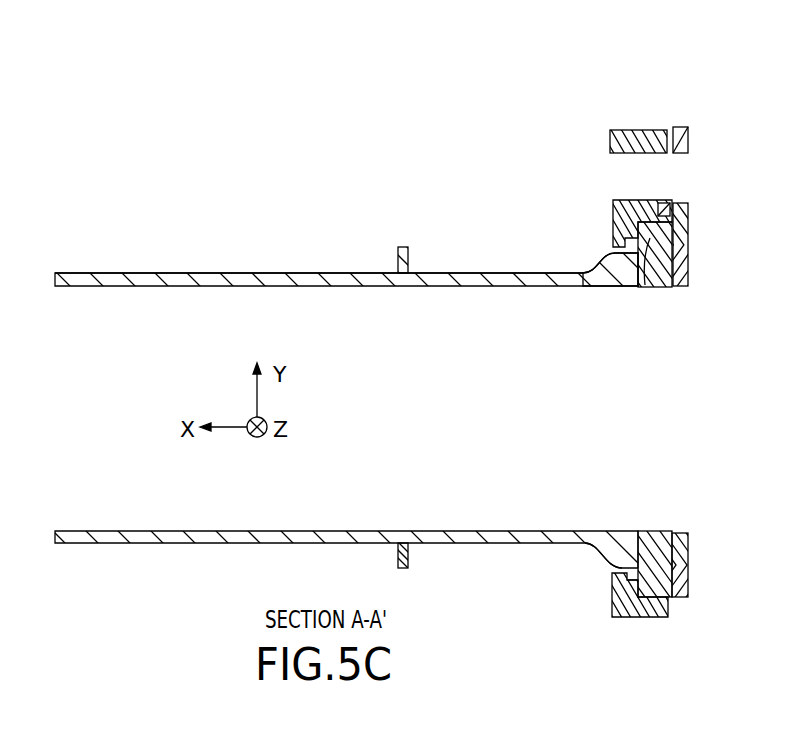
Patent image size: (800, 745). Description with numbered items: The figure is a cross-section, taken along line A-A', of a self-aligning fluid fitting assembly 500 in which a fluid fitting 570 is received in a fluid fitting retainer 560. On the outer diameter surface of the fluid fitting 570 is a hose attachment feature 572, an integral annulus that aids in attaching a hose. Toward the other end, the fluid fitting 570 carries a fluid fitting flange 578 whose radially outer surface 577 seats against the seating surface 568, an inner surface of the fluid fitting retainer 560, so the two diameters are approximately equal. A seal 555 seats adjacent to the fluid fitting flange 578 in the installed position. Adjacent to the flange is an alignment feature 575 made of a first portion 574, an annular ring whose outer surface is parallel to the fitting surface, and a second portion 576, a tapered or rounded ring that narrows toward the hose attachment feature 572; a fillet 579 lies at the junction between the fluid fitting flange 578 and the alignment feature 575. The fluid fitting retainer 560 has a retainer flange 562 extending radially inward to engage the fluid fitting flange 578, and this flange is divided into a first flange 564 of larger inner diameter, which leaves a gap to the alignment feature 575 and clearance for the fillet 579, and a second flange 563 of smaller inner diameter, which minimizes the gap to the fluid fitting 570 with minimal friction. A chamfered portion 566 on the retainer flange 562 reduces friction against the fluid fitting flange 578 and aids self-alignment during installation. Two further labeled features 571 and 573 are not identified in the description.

The display assembly 500 is at (296, 120).
The seal 555 is at (649, 244).
The fluid fitting retainer 560 is at (645, 130).
The retainer flange 562 is at (613, 232).
The second flange 563 is at (625, 252).
The first flange 564 is at (655, 560).
The chamfered portion 566 is at (668, 608).
The seating surface 568 is at (660, 225).
The fluid fitting 570 is at (122, 273).
The substrate top surface 571 is at (220, 273).
The hose attachment feature 572 is at (401, 247).
The lower tab 573 is at (404, 560).
The first portion 574 is at (637, 580).
The alignment feature 575 is at (614, 552).
The second portion 576 is at (598, 553).
The radially outer surface 577 is at (668, 210).
The fluid fitting flange 578 is at (668, 577).
The fillet 579 is at (645, 285).